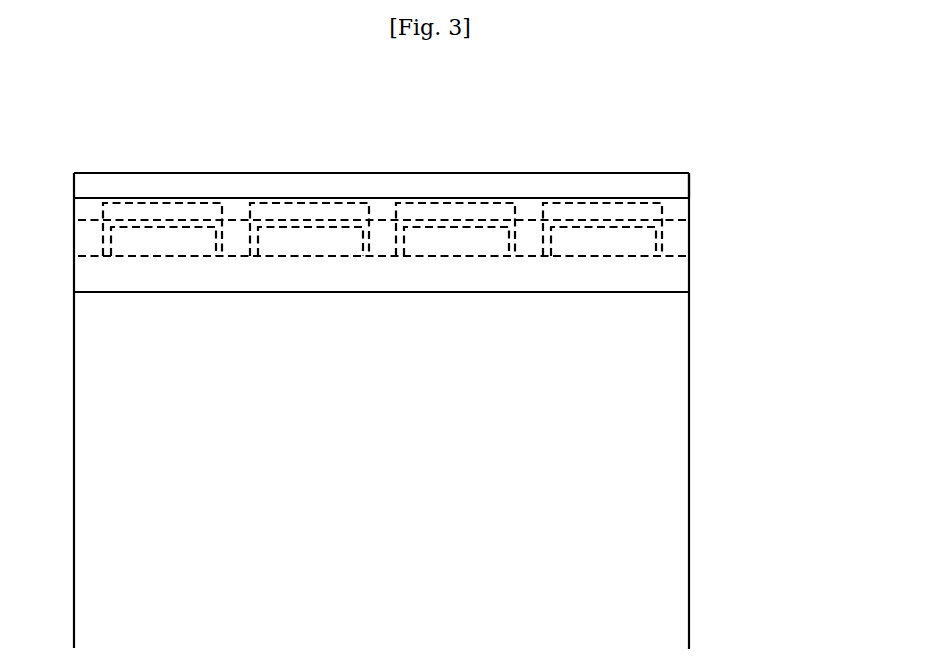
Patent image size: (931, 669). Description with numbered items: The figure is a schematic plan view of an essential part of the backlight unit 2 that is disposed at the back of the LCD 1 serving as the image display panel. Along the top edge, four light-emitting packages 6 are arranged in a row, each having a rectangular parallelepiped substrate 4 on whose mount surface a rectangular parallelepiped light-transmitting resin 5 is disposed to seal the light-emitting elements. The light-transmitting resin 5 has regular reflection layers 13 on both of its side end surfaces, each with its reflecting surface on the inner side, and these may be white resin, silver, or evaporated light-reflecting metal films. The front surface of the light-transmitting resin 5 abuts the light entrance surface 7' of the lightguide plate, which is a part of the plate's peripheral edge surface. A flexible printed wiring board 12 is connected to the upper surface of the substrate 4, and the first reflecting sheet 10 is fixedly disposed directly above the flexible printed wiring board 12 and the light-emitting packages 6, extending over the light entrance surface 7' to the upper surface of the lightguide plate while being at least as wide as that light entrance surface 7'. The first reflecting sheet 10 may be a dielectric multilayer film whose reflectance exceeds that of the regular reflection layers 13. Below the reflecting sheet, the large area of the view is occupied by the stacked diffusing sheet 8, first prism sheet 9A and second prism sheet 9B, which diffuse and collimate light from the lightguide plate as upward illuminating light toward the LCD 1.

The LCD 1 is at (689, 452).
The backlight unit 2 is at (411, 175).
The substrate 4 is at (119, 203).
The light-transmitting resin 5 is at (183, 228).
The light-emitting package 6 is at (165, 199).
The light entrance surface 7' is at (418, 232).
The diffusing sheet 8 is at (461, 411).
The first prism sheet 9A is at (461, 411).
The second prism sheet 9B is at (461, 411).
The first reflecting sheet 10 is at (637, 293).
The flexible printed wiring board 12 is at (672, 181).
The regular reflection layer 13 is at (250, 251).